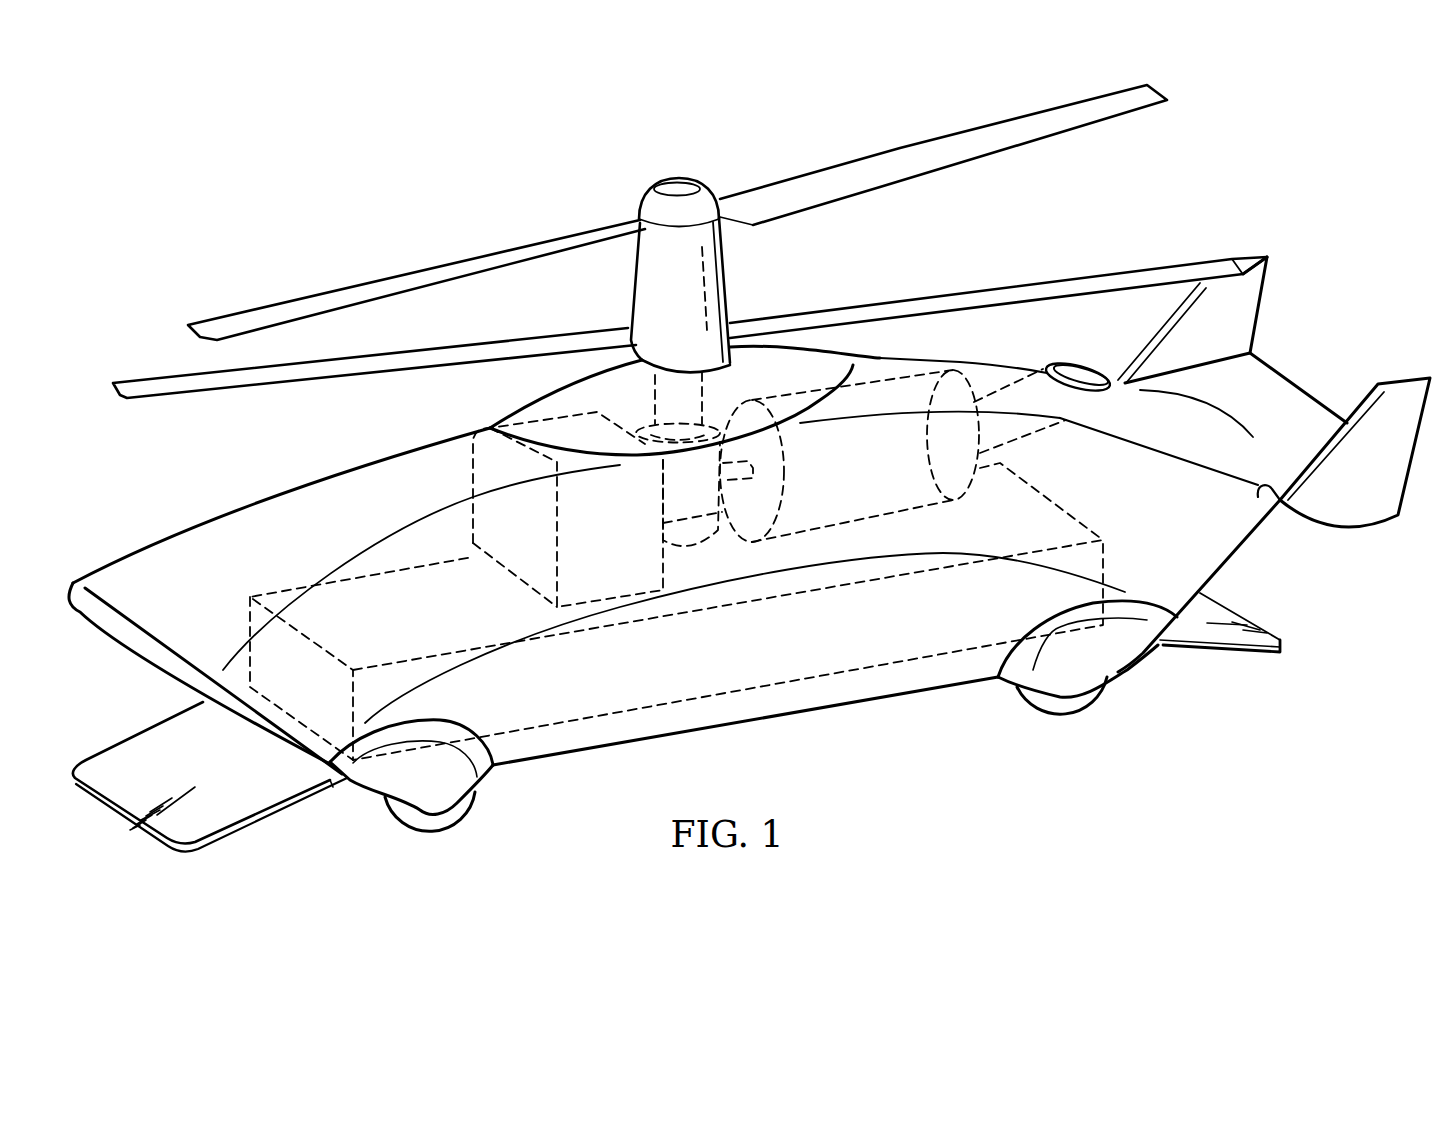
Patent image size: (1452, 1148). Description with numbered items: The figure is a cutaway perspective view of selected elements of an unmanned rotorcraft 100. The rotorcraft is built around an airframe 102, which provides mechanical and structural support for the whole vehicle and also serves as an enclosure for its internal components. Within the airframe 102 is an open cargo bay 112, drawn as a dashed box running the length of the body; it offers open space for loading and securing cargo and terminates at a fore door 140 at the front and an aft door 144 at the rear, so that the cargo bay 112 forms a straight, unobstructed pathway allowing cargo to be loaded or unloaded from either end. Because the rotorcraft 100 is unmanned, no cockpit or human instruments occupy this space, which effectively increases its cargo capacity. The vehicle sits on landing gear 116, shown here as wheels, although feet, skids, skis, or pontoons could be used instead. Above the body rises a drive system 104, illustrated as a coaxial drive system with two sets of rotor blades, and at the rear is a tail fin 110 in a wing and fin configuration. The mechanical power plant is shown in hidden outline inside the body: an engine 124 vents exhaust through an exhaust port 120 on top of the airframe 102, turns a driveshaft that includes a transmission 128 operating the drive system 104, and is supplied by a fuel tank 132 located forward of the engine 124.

The unmanned rotorcraft 100 is at (312, 173).
The airframe 102 is at (247, 517).
The drive system 104 is at (665, 178).
The tail fin 110 is at (1262, 289).
The cargo bay 112 is at (923, 663).
The landing gear 116 is at (447, 830).
The exhaust port 120 is at (1072, 362).
The engine 124 is at (903, 365).
The transmission 128 is at (705, 392).
The fuel tank 132 is at (473, 487).
The fore door 140 is at (265, 827).
The aft door 144 is at (1218, 660).